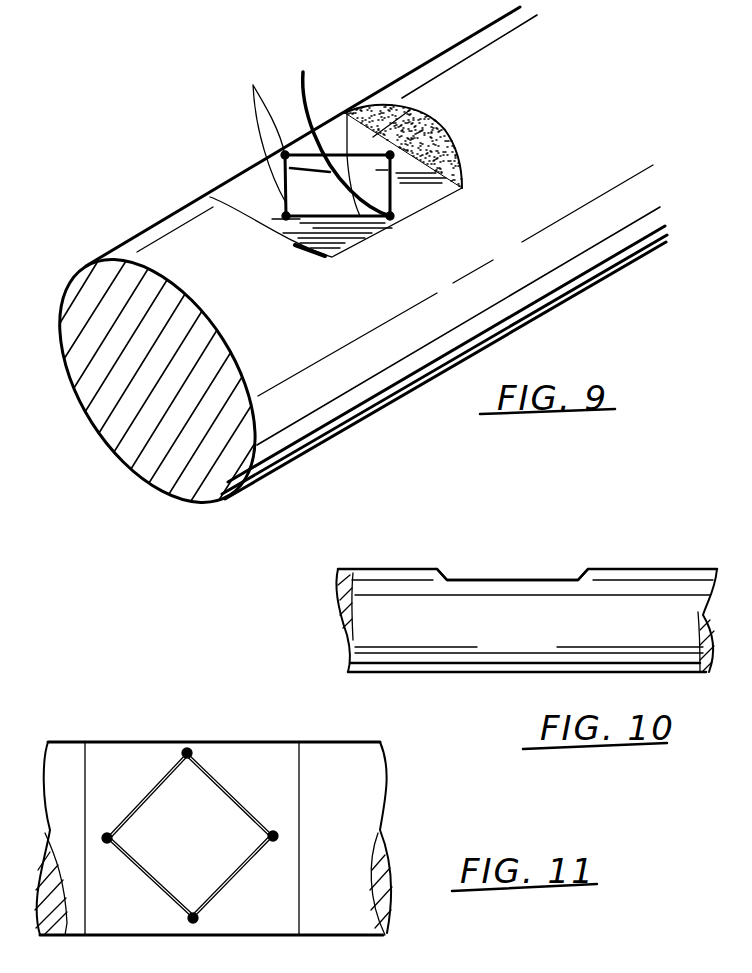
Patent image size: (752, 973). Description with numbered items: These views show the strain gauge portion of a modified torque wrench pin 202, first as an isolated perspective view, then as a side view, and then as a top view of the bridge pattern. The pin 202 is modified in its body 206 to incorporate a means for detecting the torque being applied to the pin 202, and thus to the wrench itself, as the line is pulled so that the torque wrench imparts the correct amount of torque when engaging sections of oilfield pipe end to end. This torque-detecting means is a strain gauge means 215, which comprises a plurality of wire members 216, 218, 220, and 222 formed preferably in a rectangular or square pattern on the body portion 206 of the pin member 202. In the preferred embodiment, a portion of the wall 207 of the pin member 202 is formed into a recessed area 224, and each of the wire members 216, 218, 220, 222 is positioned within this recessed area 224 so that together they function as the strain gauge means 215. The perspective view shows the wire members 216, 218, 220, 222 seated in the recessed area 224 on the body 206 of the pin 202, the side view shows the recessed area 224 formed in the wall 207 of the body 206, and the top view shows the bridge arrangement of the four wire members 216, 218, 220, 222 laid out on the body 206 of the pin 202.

In FIG. 9, the pin 202 is at (268, 487).
In FIG. 11, the pin 202 is at (358, 702).
In FIG. 9, the pin body 206 is at (427, 97).
In FIG. 10, the pin body 206 is at (625, 617).
In FIG. 11, the pin body 206 is at (353, 775).
In FIG. 9, the wall 207 is at (572, 188).
In FIG. 11, the strain gauge means 215 is at (232, 779).
In FIG. 9, the wire member 216 is at (390, 186).
In FIG. 11, the wire member 216 is at (250, 818).
In FIG. 9, the wire member 218 is at (360, 216).
In FIG. 11, the wire member 218 is at (237, 880).
In FIG. 9, the wire member 220 is at (287, 195).
In FIG. 11, the wire member 220 is at (150, 880).
In FIG. 9, the wire member 222 is at (347, 112).
In FIG. 11, the wire member 222 is at (133, 803).
In FIG. 9, the recessed area 224 is at (420, 114).
In FIG. 10, the recessed area 224 is at (473, 577).
In FIG. 11, the recessed area 224 is at (148, 770).